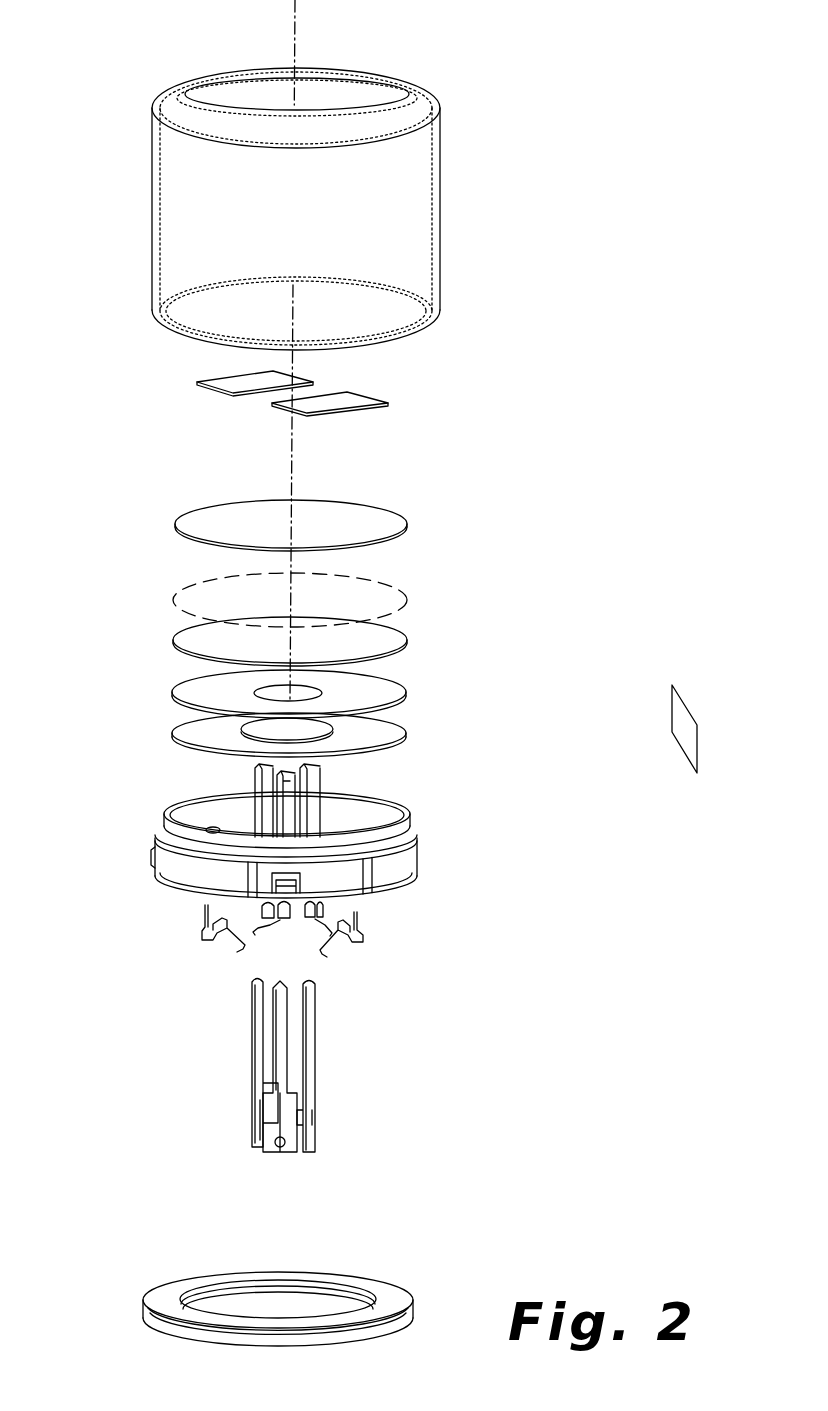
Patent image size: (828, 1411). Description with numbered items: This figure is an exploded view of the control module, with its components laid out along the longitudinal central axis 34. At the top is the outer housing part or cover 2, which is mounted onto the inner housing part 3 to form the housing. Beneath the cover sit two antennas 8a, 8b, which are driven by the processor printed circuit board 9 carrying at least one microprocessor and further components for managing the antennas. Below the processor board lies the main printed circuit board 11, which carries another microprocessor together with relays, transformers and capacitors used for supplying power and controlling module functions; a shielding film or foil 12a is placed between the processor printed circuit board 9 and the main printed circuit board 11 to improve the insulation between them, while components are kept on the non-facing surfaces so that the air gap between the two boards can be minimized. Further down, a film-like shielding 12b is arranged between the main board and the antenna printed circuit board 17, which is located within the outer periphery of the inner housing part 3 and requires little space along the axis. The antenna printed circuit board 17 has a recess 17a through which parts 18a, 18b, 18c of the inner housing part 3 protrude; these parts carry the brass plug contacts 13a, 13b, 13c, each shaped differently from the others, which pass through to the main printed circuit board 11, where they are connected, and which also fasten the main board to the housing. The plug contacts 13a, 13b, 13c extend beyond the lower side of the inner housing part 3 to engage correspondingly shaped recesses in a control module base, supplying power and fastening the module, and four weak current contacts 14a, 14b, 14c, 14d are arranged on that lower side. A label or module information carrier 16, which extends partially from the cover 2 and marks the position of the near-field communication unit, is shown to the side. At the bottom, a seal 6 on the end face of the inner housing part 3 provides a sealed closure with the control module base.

The outer housing part or cover 2 is at (412, 237).
The inner housing part 3 is at (397, 870).
The seal 6 is at (393, 1302).
The antenna 8a is at (233, 385).
The antenna 8b is at (340, 397).
The processor printed circuit board 9 is at (370, 520).
The main printed circuit board 11 is at (377, 643).
The shielding film or foil 12a is at (377, 600).
The film-like or foil-like shielding 12b is at (380, 693).
The plug contact 13a is at (260, 1115).
The plug contact 13b is at (267, 1147).
The plug contact 13c is at (310, 1120).
The weak current contact 14a is at (237, 952).
The weak current contact 14b is at (268, 927).
The weak current contact 14c is at (327, 957).
The weak current contact 14d is at (323, 915).
The label or module information carrier 16 is at (682, 730).
The antenna printed circuit board 17 is at (377, 733).
The recess 17a is at (267, 730).
The part of the lower housing part 18a is at (263, 803).
The part of the lower housing part 18b is at (287, 820).
The part of the lower housing part 18c is at (313, 807).
The longitudinal central axis 34 is at (290, 482).